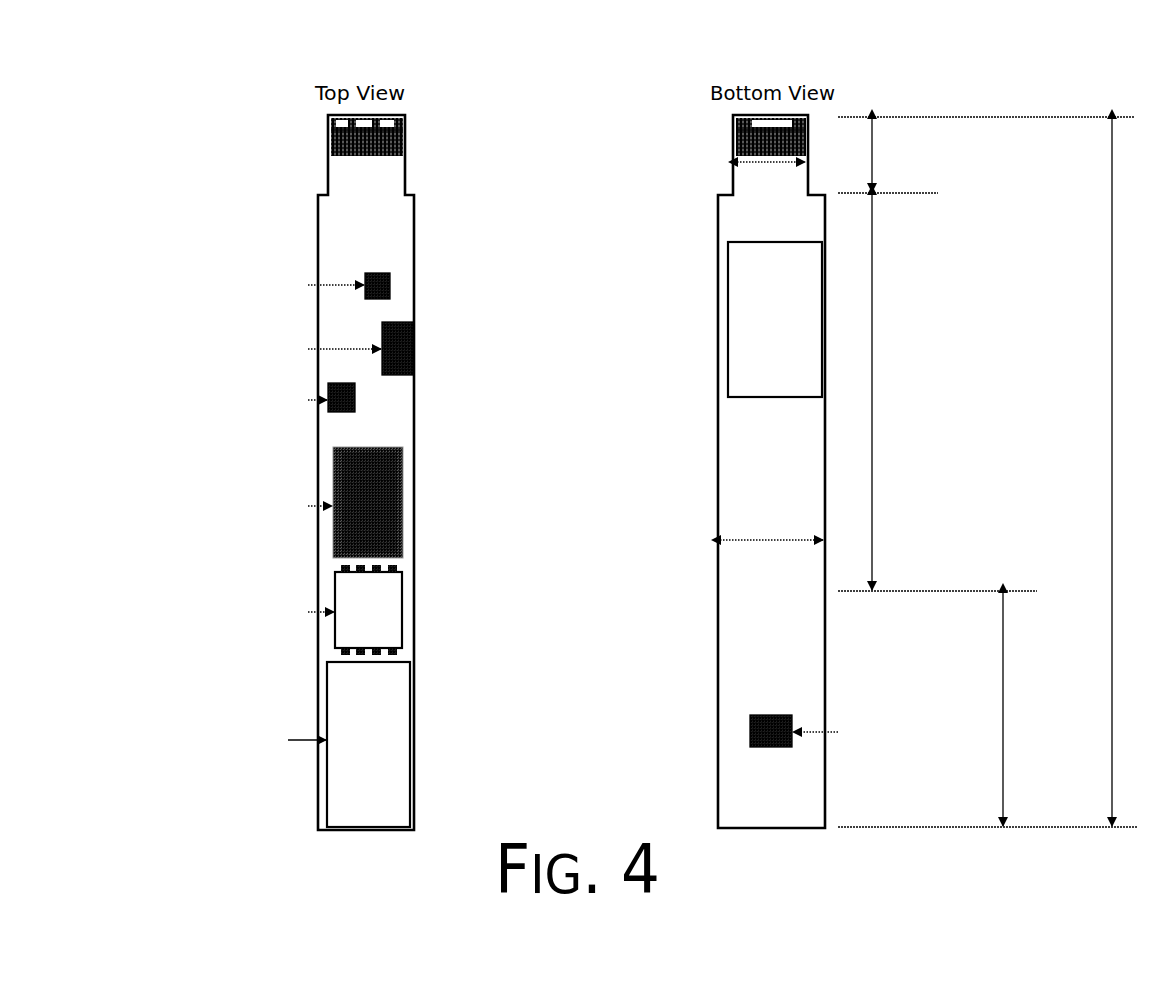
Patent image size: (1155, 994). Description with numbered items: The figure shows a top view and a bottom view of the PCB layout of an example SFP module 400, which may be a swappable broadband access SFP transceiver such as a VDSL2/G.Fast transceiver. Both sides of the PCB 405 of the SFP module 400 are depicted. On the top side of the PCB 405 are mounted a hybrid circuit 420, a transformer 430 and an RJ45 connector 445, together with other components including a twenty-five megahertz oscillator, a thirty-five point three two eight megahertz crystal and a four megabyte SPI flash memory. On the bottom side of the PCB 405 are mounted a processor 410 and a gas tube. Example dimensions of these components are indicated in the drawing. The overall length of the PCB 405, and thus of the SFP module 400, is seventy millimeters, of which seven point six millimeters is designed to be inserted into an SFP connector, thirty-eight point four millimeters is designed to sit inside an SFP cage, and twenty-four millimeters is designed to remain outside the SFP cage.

The SFP module 400 is at (572, 57).
The PCB 405 is at (408, 193).
The processor 410 is at (727, 302).
The hybrid circuit 420 is at (400, 468).
The transformer 430 is at (403, 594).
The RJ45 connector 445 is at (411, 708).